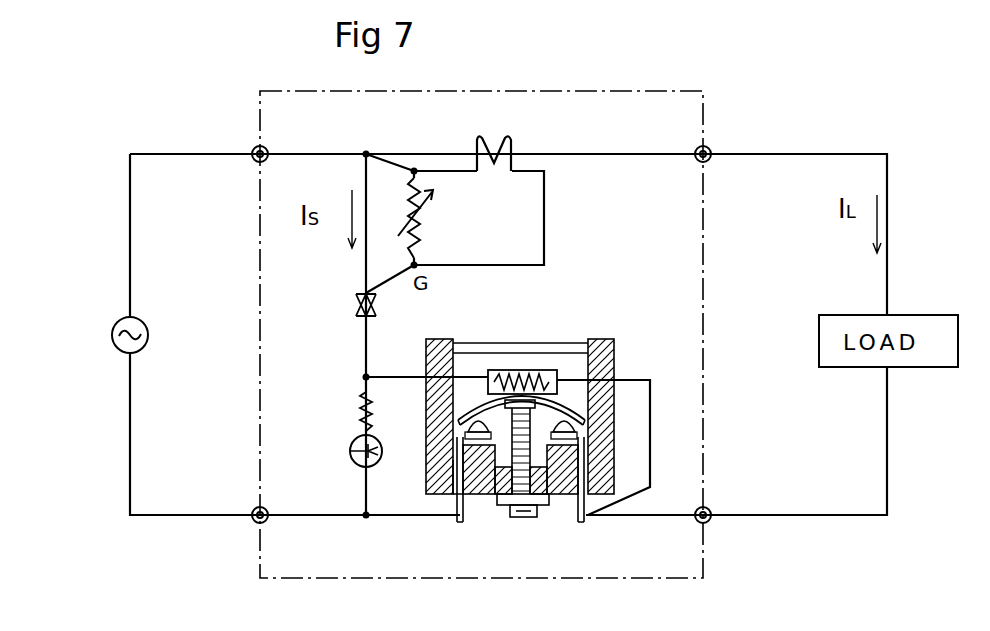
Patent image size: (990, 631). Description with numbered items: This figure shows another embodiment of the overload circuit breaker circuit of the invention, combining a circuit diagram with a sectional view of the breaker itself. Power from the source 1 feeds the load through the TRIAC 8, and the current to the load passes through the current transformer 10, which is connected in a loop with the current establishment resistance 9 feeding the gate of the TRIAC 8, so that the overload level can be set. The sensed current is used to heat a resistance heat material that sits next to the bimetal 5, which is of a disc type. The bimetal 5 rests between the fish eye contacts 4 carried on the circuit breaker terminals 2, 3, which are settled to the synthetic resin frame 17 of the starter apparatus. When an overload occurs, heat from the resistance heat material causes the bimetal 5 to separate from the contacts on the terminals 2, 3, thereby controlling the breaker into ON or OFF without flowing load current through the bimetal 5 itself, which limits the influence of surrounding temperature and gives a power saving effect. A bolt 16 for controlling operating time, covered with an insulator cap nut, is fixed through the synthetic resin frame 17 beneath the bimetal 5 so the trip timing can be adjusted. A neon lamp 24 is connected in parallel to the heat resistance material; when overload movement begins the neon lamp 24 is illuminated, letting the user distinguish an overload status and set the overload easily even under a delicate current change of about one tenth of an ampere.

The AC power source 1 is at (112, 330).
The circuit breaker terminal 2 is at (432, 495).
The circuit breaker terminal 3 is at (458, 497).
The fish eye contacts 4 is at (566, 413).
The bimetal of a DISC type 5 is at (484, 397).
The TRIAC 8 is at (356, 318).
The current establishment resistance 9 is at (411, 216).
The current transformer 10 is at (510, 152).
The bolt for driving time control 16 is at (538, 498).
The synthetic resin frame 17 is at (614, 349).
The neon lamp 24 is at (352, 459).